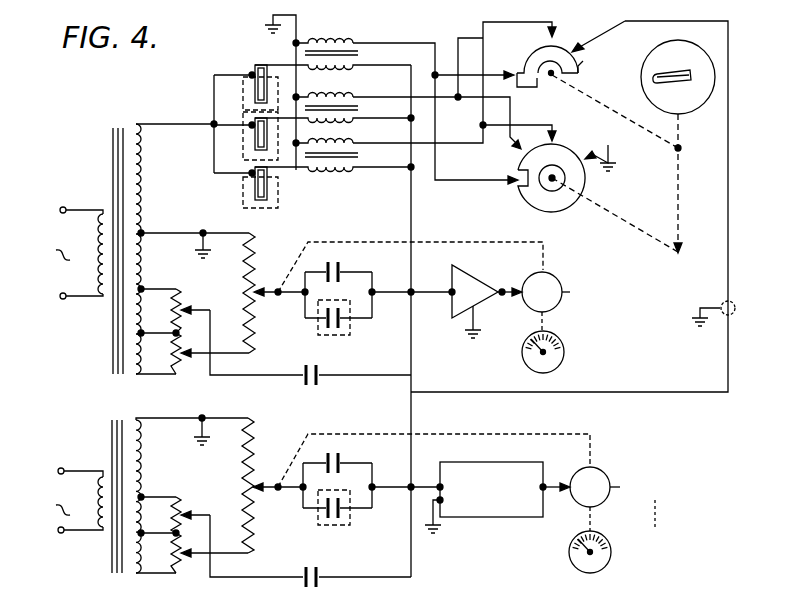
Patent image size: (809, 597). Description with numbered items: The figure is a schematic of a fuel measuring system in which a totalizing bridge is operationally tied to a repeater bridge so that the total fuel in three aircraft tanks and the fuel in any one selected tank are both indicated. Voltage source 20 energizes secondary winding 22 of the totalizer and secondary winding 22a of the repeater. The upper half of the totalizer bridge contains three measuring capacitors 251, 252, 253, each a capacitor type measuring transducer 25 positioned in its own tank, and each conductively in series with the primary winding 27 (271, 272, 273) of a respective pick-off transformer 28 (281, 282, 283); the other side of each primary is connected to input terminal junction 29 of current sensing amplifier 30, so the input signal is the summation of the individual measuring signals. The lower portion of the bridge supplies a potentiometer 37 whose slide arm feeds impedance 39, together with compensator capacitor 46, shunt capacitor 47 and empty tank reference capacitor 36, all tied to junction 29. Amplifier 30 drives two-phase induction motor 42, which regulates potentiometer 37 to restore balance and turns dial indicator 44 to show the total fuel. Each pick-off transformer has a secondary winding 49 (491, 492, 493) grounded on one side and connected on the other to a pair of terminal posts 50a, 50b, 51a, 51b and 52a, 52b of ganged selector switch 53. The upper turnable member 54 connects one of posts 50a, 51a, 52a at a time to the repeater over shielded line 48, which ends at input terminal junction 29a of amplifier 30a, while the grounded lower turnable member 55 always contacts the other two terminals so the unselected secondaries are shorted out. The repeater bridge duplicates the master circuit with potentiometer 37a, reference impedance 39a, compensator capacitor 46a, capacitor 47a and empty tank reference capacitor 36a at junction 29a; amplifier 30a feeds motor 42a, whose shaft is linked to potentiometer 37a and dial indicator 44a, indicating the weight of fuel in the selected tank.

The voltage source 20 is at (63, 235).
The secondary winding 22 is at (141, 170).
The secondary winding 22a is at (145, 477).
The capacitor type measuring transducer 25 is at (229, 129).
The first measuring capacitor 251 is at (250, 92).
The second measuring capacitor 252 is at (244, 140).
The third measuring capacitor 253 is at (250, 201).
The primary winding 27 is at (333, 122).
The primary winding of first pick-off transformer 271 is at (356, 64).
The primary winding of second pick-off transformer 272 is at (345, 122).
The primary winding of third pick-off transformer 273 is at (322, 171).
The pick-off transformer 28 is at (454, 100).
The first pick-off transformer 281 is at (357, 50).
The second pick-off transformer 282 is at (359, 108).
The third pick-off transformer 283 is at (360, 157).
The secondary winding 49 is at (335, 102).
The secondary winding of first pick-off transformer 491 is at (343, 30).
The secondary winding of second pick-off transformer 492 is at (340, 94).
The secondary winding of third pick-off transformer 493 is at (306, 147).
The input terminal junction 29 is at (418, 290).
The input terminal junction 29a is at (414, 482).
The current sensing amplifier 30 is at (476, 282).
The amplifier 30a is at (541, 470).
The empty tank reference capacitor 36 is at (320, 375).
The empty tank reference capacitor 36a is at (320, 571).
The potentiometer 37 is at (256, 250).
The potentiometer 37a is at (252, 456).
The impedance 39 is at (409, 296).
The reference impedance 39a is at (432, 487).
The two-phase induction motor 42 is at (563, 290).
The two-phase induction motor 42a is at (612, 486).
The dial indicator 44 is at (564, 352).
The dial indicator 44a is at (610, 545).
The compensator capacitor 46 is at (340, 320).
The compensator capacitor 46a is at (341, 512).
The capacitor 47 is at (340, 270).
The capacitor 47a is at (338, 461).
The shielded line 48 is at (730, 243).
The terminal post 50a is at (509, 80).
The terminal post 50b is at (504, 182).
The terminal post 51a is at (519, 47).
The terminal post 51b is at (517, 148).
The terminal post 52a is at (549, 43).
The terminal post 52b is at (550, 183).
The ganged selector switch 53 is at (685, 35).
The upper turnable member 54 is at (579, 70).
The lower turnable member 55 is at (558, 208).